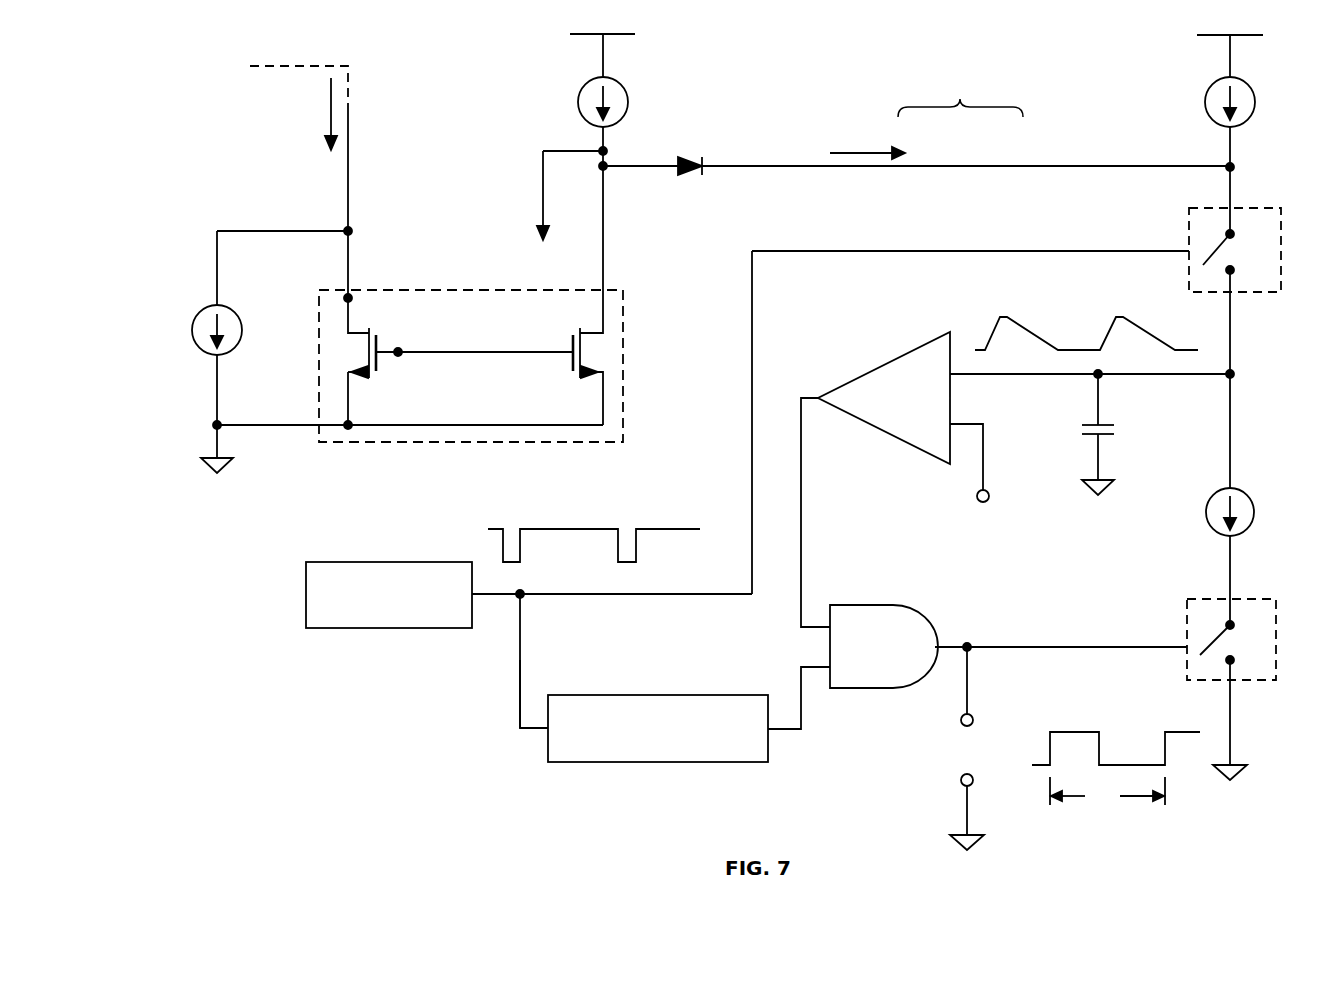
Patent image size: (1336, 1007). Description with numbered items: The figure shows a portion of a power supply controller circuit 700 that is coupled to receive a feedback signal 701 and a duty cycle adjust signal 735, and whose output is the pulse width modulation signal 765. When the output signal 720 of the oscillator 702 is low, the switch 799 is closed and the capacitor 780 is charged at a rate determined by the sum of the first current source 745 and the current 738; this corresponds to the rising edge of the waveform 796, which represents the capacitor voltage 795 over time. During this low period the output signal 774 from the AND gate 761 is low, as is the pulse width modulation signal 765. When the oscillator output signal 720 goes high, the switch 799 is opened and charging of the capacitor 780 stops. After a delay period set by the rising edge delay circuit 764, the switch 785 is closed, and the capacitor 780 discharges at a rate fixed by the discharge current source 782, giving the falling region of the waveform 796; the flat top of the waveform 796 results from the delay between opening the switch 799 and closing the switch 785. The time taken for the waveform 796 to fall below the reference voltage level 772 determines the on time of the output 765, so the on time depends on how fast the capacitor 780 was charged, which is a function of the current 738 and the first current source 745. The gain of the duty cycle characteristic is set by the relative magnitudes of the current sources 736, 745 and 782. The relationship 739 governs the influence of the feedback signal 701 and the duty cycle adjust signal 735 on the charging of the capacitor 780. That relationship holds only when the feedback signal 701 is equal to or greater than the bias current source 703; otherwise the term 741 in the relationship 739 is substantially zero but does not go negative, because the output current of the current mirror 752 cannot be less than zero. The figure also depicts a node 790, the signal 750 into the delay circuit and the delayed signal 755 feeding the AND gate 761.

The power supply controller circuit 700 is at (786, 39).
The feedback signal IFB 701 is at (318, 108).
The oscillator 702 is at (380, 637).
The current source IB 703 is at (197, 302).
The oscillator output signal 720 is at (553, 605).
The duty cycle adjust signal 735 is at (537, 188).
The current source PI0 736 is at (640, 87).
The current I 738 is at (817, 110).
The relationship 739 is at (1035, 75).
The term 741 is at (962, 98).
The current source I1 745 is at (1197, 88).
The rising edge delay input signal 750 is at (727, 690).
The current mirror 752 is at (603, 447).
The delayed oscillator signal 755 is at (815, 725).
The AND gate 761 is at (884, 646).
The rising edge delay circuit 764 is at (583, 763).
The VPWM signal 765 is at (960, 752).
The reference voltage level 772 is at (1000, 495).
The output signal 774 is at (950, 640).
The capacitor CD 780 is at (1070, 420).
The current source 782 is at (1207, 533).
The switch 785 is at (1252, 690).
The node 790 is at (1240, 378).
The voltage VD 795 is at (1150, 417).
The waveform 796 is at (1133, 318).
The switch 799 is at (1189, 222).